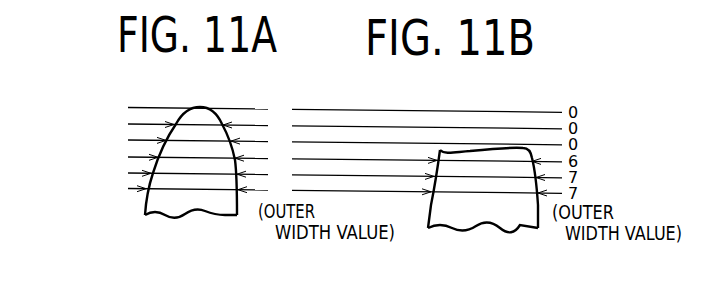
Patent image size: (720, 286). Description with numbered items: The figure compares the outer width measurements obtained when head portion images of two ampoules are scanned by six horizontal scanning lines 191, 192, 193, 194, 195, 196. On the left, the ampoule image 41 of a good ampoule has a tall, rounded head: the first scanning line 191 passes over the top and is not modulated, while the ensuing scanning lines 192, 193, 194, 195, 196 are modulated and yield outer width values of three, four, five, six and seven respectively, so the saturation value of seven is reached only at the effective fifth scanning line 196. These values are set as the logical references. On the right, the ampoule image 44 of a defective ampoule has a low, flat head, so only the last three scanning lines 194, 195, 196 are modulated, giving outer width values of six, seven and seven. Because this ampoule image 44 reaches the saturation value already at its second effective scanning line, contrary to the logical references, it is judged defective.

In FIG. 11A, the first scanning line 191 is at (128, 108).
In FIG. 11A, the second scanning line 192 is at (128, 124).
In FIG. 11A, the third scanning line 193 is at (128, 140).
In FIG. 11A, the fourth scanning line 194 is at (128, 157).
In FIG. 11A, the fifth scanning line 195 is at (128, 173).
In FIG. 11A, the sixth scanning line 196 is at (128, 188).
In FIG. 11A, the ampoule image of a good ampoule 41 is at (237, 199).
In FIG. 11B, the ampoule image of a defective ampoule 44 is at (536, 211).